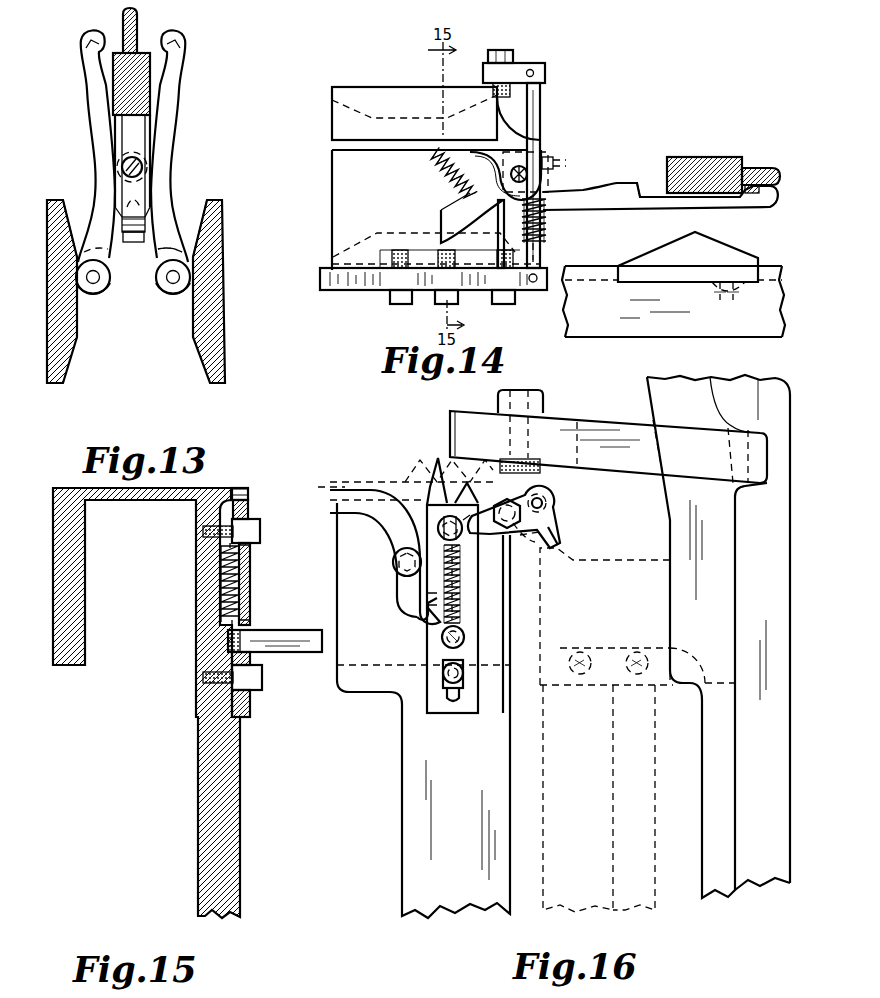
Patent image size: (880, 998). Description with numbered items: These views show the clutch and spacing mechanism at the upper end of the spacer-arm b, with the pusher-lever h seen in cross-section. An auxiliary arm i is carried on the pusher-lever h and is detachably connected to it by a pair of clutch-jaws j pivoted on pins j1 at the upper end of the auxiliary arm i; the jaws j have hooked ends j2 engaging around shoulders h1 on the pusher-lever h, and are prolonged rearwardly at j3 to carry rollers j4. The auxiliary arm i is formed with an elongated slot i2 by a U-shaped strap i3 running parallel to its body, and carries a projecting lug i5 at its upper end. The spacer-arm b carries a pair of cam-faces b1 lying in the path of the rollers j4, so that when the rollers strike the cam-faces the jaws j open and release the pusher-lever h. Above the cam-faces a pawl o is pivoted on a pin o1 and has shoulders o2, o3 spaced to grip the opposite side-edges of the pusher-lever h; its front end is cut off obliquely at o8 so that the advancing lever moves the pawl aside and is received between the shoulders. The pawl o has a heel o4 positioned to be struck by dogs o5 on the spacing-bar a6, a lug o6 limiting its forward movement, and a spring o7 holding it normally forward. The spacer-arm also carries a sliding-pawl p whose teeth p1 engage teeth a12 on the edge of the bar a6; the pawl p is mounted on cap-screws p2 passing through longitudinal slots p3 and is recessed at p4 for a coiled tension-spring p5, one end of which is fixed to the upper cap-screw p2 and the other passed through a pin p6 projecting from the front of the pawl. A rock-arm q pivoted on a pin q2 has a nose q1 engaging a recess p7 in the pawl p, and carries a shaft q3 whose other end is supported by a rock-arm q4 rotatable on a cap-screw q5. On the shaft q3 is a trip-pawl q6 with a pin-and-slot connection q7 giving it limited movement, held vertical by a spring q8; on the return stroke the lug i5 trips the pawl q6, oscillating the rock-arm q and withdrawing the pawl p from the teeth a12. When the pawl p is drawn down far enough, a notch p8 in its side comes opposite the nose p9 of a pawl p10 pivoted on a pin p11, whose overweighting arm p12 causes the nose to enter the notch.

In FIG. 13, the spacer-arm b is at (215, 265).
In FIG. 14, the spacer-arm b is at (333, 118).
In FIG. 15, the spacer-arm b is at (237, 848).
In FIG. 16, the spacer-arm b is at (405, 848).
In FIG. 13, the cam-faces b1 is at (72, 357).
In FIG. 14, the cam-faces b1 is at (357, 245).
In FIG. 15, the cam-faces b1 is at (87, 595).
In FIG. 13, the pusher-lever h is at (150, 90).
In FIG. 14, the pusher-lever h is at (693, 158).
In FIG. 16, the pusher-lever h is at (672, 508).
In FIG. 13, the shoulders h1 is at (137, 41).
In FIG. 14, the shoulders h1 is at (753, 155).
In FIG. 16, the shoulders h1 is at (732, 425).
In FIG. 13, the auxiliary arm i is at (140, 135).
In FIG. 16, the auxiliary arm i is at (543, 806).
In FIG. 16, the elongated slot i2 is at (702, 795).
In FIG. 16, the U-shaped strap i3 is at (700, 648).
In FIG. 13, the projecting lug i5 is at (122, 227).
In FIG. 16, the projecting lug i5 is at (575, 558).
In FIG. 13, the clutch-jaws j is at (160, 173).
In FIG. 13, the pins j1 is at (120, 169).
In FIG. 13, the hooked ends j2 is at (94, 33).
In FIG. 13, the prolonged ends j3 is at (112, 251).
In FIG. 13, the rollers j4 is at (157, 289).
In FIG. 14, the pivoted pawl o is at (582, 190).
In FIG. 16, the pivoted pawl o is at (598, 423).
In FIG. 14, the pin o1 is at (515, 168).
In FIG. 16, the pin o1 is at (543, 404).
In FIG. 14, the shoulder o2 is at (640, 186).
In FIG. 14, the shoulder o3 is at (752, 177).
In FIG. 14, the heel o4 is at (440, 245).
In FIG. 16, the heel o4 is at (452, 440).
In FIG. 14, the dogs o5 is at (692, 248).
In FIG. 14, the lug o6 is at (543, 143).
In FIG. 14, the spring o7 is at (450, 177).
In FIG. 14, the oblique front end o8 is at (762, 187).
In FIG. 14, the spacing-bar a6 is at (617, 330).
In FIG. 16, the spacing-bar a6 is at (310, 488).
In FIG. 16, the teeth a12 is at (408, 468).
In FIG. 14, the sliding-pawl p is at (463, 290).
In FIG. 15, the sliding-pawl p is at (247, 603).
In FIG. 16, the sliding-pawl p is at (432, 655).
In FIG. 14, the teeth p1 is at (445, 284).
In FIG. 15, the teeth p1 is at (247, 492).
In FIG. 16, the teeth p1 is at (438, 470).
In FIG. 14, the cap-screws p2 is at (447, 293).
In FIG. 15, the cap-screws p2 is at (262, 525).
In FIG. 16, the cap-screws p2 is at (438, 525).
In FIG. 15, the longitudinal slots p3 is at (248, 550).
In FIG. 16, the longitudinal slots p3 is at (449, 516).
In FIG. 15, the recess p4 is at (248, 580).
In FIG. 15, the coiled tension-spring p5 is at (220, 577).
In FIG. 16, the coiled tension-spring p5 is at (465, 590).
In FIG. 15, the pin p6 is at (290, 630).
In FIG. 16, the pin p6 is at (462, 634).
In FIG. 16, the recess p7 is at (466, 520).
In FIG. 16, the notch p8 is at (441, 582).
In FIG. 16, the nose p9 is at (425, 620).
In FIG. 16, the pawl p10 is at (410, 596).
In FIG. 16, the pin p11 is at (393, 567).
In FIG. 16, the overweighting arm p12 is at (378, 520).
In FIG. 14, the rock-arm q is at (520, 282).
In FIG. 16, the rock-arm q is at (508, 540).
In FIG. 16, the nose q1 is at (472, 535).
In FIG. 14, the pin q2 is at (502, 295).
In FIG. 16, the pin q2 is at (496, 510).
In FIG. 14, the shaft q3 is at (538, 112).
In FIG. 16, the shaft q3 is at (546, 503).
In FIG. 14, the rock-arm q4 is at (518, 67).
In FIG. 14, the cap-screw q5 is at (492, 55).
In FIG. 14, the trip-pawl q6 is at (553, 162).
In FIG. 16, the trip-pawl q6 is at (562, 540).
In FIG. 14, the pin-and-slot connection q7 is at (560, 165).
In FIG. 14, the spring q8 is at (548, 227).
In FIG. 16, the spring q8 is at (555, 527).